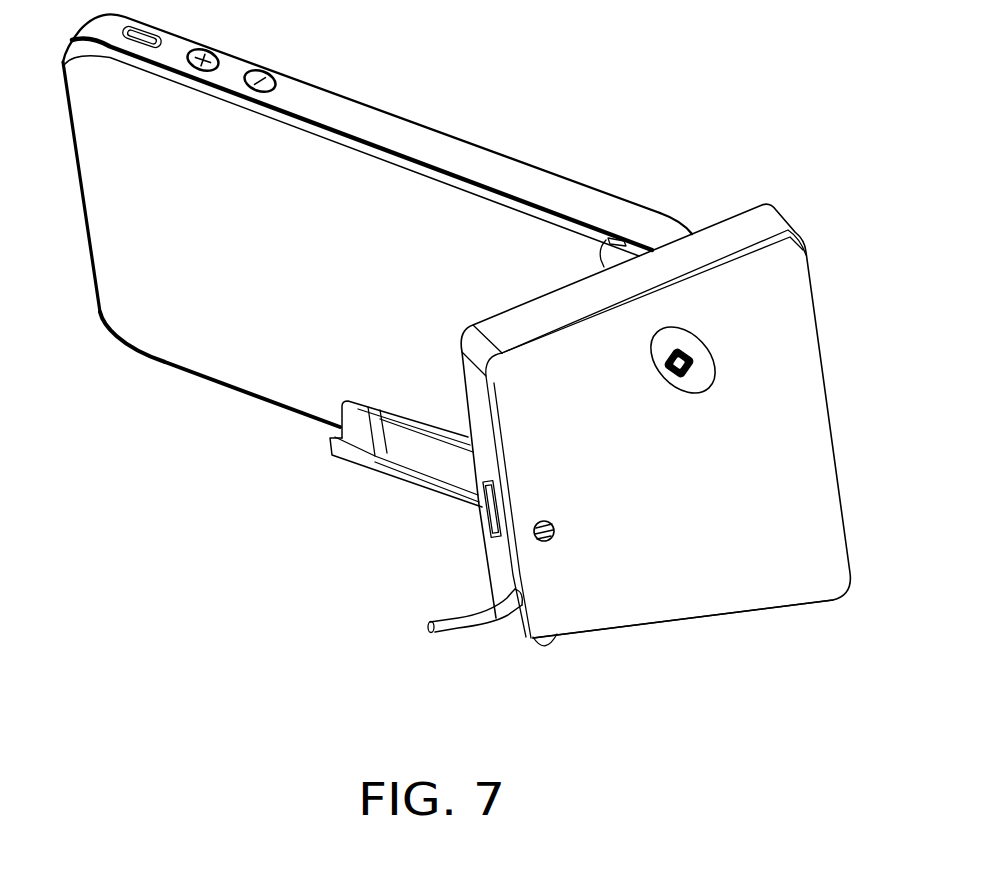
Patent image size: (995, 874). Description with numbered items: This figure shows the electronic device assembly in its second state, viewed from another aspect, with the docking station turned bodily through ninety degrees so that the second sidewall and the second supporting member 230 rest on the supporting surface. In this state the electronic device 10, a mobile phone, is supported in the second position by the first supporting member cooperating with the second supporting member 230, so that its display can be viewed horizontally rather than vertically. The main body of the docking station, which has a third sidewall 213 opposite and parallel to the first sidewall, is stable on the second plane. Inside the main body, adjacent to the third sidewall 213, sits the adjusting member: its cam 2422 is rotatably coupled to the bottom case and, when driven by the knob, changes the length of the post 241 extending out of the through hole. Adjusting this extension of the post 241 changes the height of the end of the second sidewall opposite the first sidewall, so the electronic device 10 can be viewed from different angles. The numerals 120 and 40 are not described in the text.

The electronic device 10 is at (183, 297).
The supporting plate 120 is at (783, 275).
The third sidewall 213 is at (728, 617).
The second supporting member 230 is at (387, 466).
The post 241 is at (540, 648).
The cam 2422 is at (548, 542).
The cable 40 is at (458, 618).